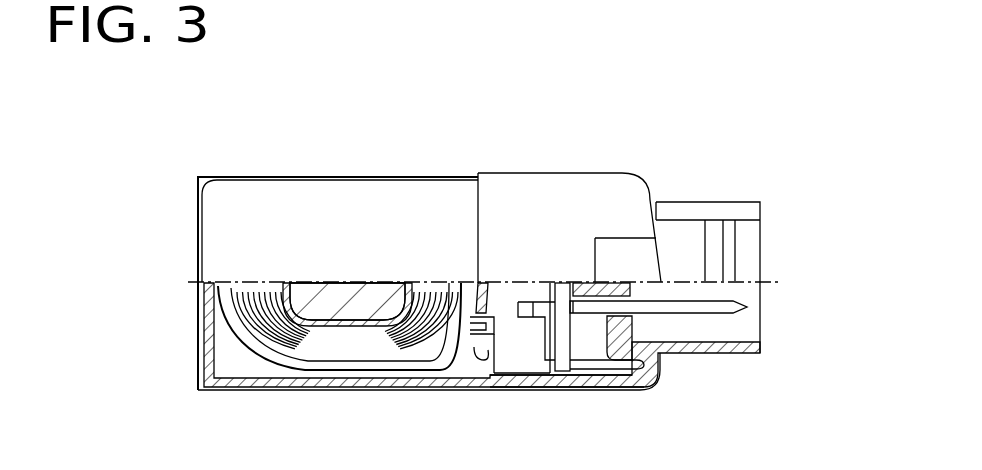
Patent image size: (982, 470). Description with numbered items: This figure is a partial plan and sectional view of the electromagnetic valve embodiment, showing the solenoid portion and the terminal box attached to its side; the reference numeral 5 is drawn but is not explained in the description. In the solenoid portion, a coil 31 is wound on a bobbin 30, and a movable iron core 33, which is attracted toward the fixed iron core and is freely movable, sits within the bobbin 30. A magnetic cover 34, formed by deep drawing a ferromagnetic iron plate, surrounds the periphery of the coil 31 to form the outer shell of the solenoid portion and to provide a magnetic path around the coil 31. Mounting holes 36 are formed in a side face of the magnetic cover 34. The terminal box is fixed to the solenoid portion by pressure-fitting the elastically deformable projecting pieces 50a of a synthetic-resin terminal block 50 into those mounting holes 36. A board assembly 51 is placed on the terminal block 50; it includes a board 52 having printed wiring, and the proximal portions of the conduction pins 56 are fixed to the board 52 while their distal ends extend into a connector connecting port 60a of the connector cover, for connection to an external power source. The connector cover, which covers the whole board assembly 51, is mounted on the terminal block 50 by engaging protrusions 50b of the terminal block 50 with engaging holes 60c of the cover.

The case 5 is at (594, 183).
The bobbin 30 is at (325, 330).
The coil 31 is at (290, 333).
The movable iron core 33 is at (339, 299).
The magnetic cover 34 is at (350, 382).
The mounting holes 36 is at (484, 352).
The terminal block 50 is at (508, 355).
The projecting pieces 50a is at (478, 368).
The engaging protrusions 50b is at (540, 335).
The board assembly 51 is at (579, 356).
The board 52 is at (561, 372).
The conduction pins 56 is at (706, 305).
The connector connecting port 60a is at (728, 342).
The engaging holes 60c is at (539, 378).